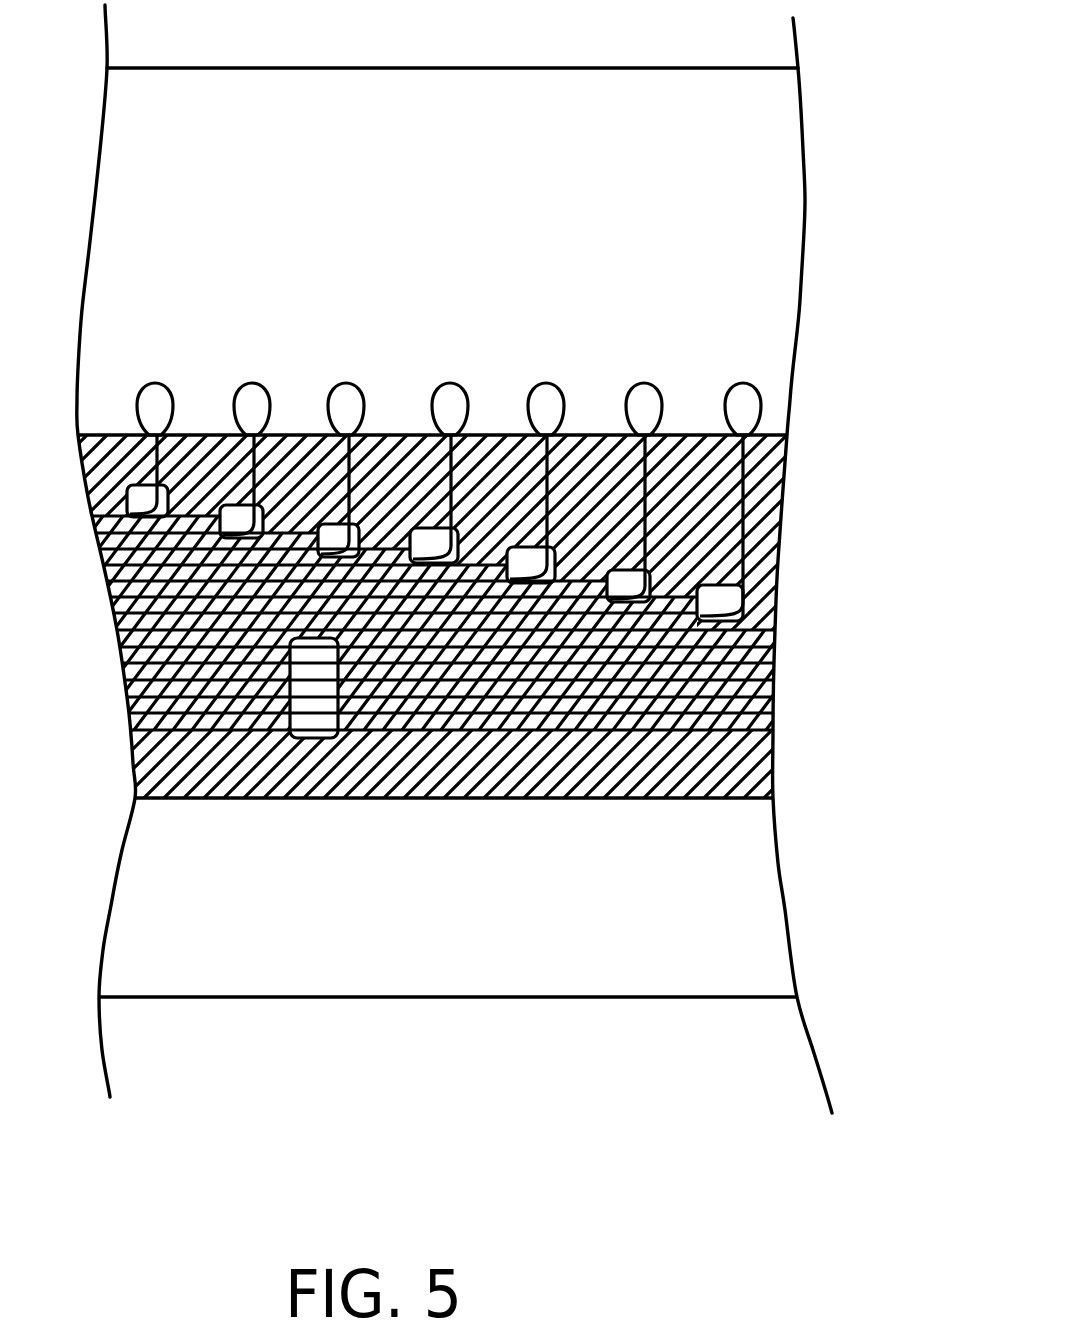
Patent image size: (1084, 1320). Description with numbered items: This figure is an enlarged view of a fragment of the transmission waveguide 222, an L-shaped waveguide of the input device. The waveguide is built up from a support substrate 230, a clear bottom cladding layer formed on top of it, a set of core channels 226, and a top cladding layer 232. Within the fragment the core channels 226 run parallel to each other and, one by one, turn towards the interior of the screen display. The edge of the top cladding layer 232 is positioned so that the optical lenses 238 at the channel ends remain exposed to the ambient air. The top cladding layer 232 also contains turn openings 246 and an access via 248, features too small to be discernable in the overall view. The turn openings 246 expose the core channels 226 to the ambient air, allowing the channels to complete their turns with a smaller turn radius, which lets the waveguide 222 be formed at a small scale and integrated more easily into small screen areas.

The transmission waveguide 222 is at (281, 1128).
The core channels 226 is at (773, 687).
The support substrate 230 is at (505, 999).
The top cladding layer 232 is at (720, 800).
The optical lenses 238 is at (642, 383).
The turn openings 246 is at (655, 576).
The access via 248 is at (317, 738).